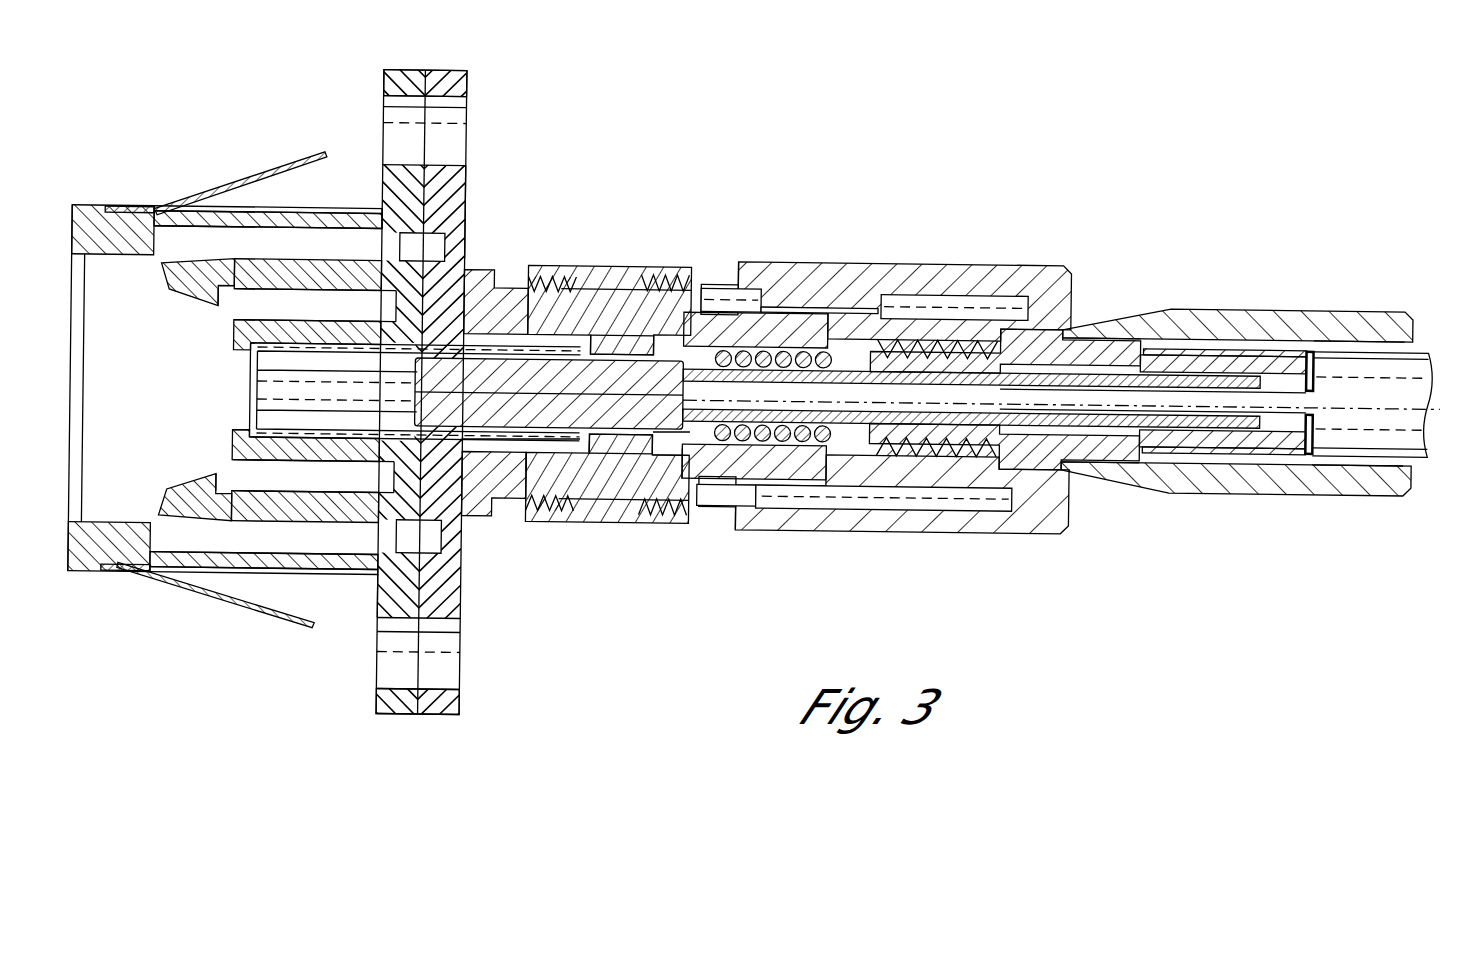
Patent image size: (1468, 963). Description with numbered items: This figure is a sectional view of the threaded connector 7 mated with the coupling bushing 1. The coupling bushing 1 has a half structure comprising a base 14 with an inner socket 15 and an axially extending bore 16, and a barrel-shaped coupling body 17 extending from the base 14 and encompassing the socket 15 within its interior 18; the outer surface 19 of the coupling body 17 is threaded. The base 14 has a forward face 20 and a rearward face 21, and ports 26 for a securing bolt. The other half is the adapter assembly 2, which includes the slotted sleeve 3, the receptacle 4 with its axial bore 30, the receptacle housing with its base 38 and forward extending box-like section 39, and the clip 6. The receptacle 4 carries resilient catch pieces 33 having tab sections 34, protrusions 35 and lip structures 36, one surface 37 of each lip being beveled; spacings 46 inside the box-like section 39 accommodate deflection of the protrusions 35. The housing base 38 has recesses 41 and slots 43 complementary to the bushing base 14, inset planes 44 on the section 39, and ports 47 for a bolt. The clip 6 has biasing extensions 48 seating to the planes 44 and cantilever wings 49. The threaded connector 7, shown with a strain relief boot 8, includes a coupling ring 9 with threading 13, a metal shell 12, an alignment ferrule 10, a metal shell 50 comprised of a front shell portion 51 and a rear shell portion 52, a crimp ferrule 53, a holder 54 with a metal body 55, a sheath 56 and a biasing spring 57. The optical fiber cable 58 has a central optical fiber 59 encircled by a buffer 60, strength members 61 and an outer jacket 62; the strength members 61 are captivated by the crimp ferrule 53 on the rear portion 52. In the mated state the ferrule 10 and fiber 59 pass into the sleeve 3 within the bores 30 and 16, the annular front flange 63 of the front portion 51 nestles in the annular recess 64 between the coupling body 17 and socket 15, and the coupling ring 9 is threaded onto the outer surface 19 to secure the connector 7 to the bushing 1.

The coupling bushing 1 is at (468, 176).
The adapter assembly 2 is at (375, 598).
The slotted sleeve 3 is at (270, 424).
The receptacle 4 is at (247, 466).
The clip 6 is at (130, 206).
The threaded connector 7 is at (745, 262).
The strain relief boot 8 is at (1249, 298).
The coupling ring 9 is at (636, 285).
The alignment ferrule 10 is at (470, 446).
The metal shell 12 is at (620, 298).
The threading 13 is at (705, 280).
The base 14 is at (466, 207).
The inner socket 15 is at (595, 286).
The bore 16 is at (472, 338).
The coupling body 17 is at (520, 500).
The interior 18 is at (593, 490).
The outer surface 19 is at (618, 490).
The forward face 20 is at (423, 70).
The rearward face 21 is at (460, 594).
The ports 26 is at (466, 118).
The axial bore 30 is at (246, 361).
The resilient catch pieces 33 is at (331, 257).
The tab sections 34 is at (384, 292).
The protrusions 35 is at (178, 228).
The lip structures 36 is at (215, 307).
The beveled surface 37 is at (162, 270).
The base 38 is at (383, 205).
The box-like section 39 is at (76, 576).
The recesses 41 is at (397, 246).
The slots 43 is at (396, 539).
The inset planes 44 is at (273, 204).
The spacings 46 is at (277, 255).
The ports 47 is at (381, 104).
The biasing extensions 48 is at (118, 207).
The wings 49 is at (243, 182).
The metal shell 50 is at (800, 317).
The front shell portion 51 is at (767, 310).
The rear shell portion 52 is at (1103, 333).
The crimp ferrule 53 is at (1150, 350).
The holder 54 is at (714, 452).
The metal body 55 is at (695, 472).
The sheath 56 is at (1080, 330).
The biasing spring 57 is at (823, 347).
The optical fiber cable 58 is at (1337, 343).
The optical fiber 59 is at (415, 389).
The buffer 60 is at (1187, 396).
The strength members 61 is at (1308, 340).
The outer jacket 62 is at (1427, 346).
The annular front flange 63 is at (575, 336).
The annular recess 64 is at (580, 332).